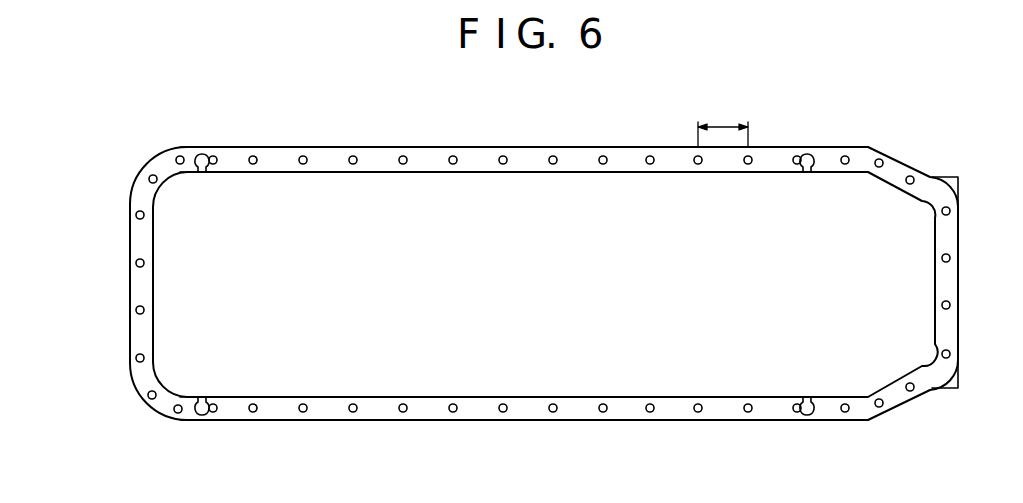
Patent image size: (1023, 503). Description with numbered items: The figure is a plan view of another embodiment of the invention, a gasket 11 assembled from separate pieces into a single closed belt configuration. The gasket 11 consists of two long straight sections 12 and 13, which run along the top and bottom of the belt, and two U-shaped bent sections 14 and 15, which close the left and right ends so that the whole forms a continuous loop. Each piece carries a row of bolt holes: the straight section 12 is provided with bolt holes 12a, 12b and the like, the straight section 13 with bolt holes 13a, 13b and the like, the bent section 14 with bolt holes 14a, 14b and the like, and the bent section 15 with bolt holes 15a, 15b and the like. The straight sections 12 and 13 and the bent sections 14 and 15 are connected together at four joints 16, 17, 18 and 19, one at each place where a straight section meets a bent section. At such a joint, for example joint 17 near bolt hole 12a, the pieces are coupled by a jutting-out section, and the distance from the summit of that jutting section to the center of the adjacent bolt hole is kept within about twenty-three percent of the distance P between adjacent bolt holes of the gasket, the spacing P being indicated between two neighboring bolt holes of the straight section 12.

The gasket 11 is at (103, 310).
The straight section 12 is at (585, 147).
The bolt hole 12a is at (797, 171).
The bolt hole 12b is at (748, 171).
The straight section 13 is at (480, 421).
The bolt hole 13a is at (795, 399).
The bolt hole 13b is at (748, 399).
The U-shaped bent section 14 is at (130, 333).
The bolt hole 14a is at (176, 415).
The bolt hole 14b is at (149, 399).
The U-shaped bent section 15 is at (958, 318).
The bolt hole 15a is at (845, 399).
The bolt hole 15b is at (879, 396).
The joint 16 is at (208, 147).
The joint 17 is at (805, 147).
The joint 18 is at (201, 421).
The joint 19 is at (805, 421).
The distance between adjacent bolt holes P is at (723, 117).